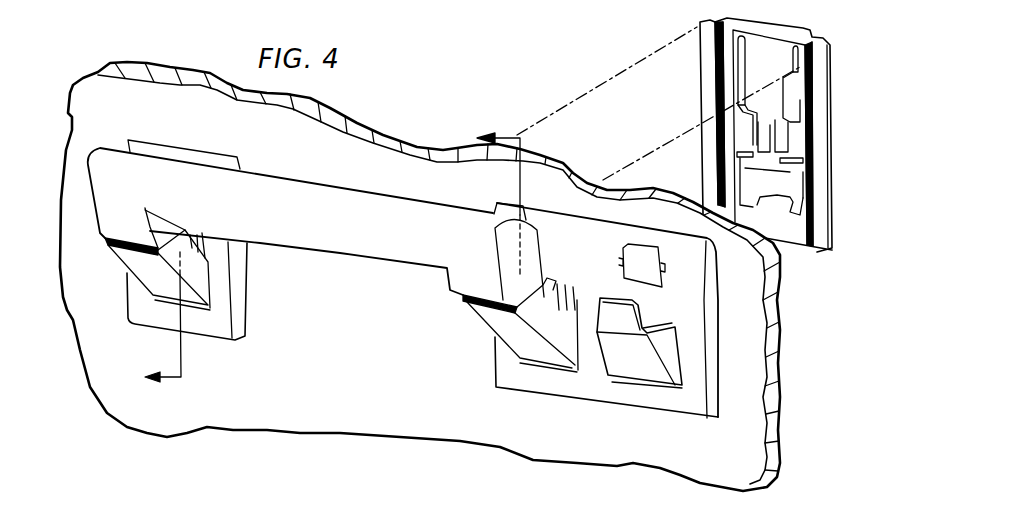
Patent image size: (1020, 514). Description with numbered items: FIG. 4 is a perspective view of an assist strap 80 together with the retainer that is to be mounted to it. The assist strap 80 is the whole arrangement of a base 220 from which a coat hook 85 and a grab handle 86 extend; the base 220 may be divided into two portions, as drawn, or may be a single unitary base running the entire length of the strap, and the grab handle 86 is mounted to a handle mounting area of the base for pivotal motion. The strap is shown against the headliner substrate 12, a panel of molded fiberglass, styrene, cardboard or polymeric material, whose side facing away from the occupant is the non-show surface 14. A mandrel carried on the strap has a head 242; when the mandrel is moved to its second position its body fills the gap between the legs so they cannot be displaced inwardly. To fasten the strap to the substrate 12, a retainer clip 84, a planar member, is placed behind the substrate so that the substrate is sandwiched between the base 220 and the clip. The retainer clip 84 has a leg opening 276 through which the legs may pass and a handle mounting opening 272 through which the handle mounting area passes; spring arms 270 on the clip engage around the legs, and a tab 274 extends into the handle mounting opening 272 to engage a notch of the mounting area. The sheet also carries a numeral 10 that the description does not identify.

The connector assembly 10 is at (750, 477).
The substrate 12 is at (774, 451).
The non-show surface 14 is at (777, 412).
The assist strap 80 is at (403, 318).
The retainer clip 84 is at (767, 160).
The coat hook 85 is at (617, 362).
The grab handle 86 is at (317, 185).
The base 220 is at (241, 333).
The head 242 is at (545, 282).
The spring arms 270 is at (790, 140).
The handle mounting opening 272 is at (800, 193).
The tab 274 is at (803, 212).
The leg opening 276 is at (740, 86).